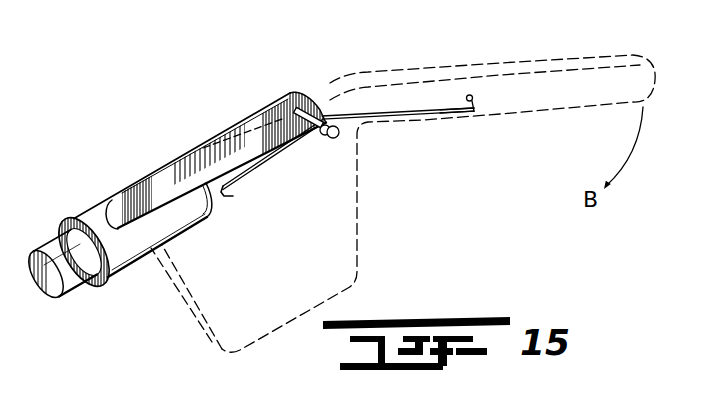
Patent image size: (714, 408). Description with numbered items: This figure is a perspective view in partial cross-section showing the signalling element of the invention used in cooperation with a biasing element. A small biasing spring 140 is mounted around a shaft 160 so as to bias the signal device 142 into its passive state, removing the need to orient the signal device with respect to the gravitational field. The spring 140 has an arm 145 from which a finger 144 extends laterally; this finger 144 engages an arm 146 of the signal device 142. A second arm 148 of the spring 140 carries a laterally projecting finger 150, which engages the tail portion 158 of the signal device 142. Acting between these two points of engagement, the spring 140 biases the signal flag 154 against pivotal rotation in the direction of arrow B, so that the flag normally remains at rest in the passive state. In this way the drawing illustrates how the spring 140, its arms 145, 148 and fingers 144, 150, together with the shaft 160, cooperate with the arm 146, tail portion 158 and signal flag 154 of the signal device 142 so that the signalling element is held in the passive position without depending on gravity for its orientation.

The biasing spring 140 is at (422, 121).
The signal device 142 is at (257, 108).
The finger 144 is at (231, 196).
The arm 145 is at (275, 158).
The arm 146 is at (161, 168).
The arm 148 is at (463, 118).
The finger 150 is at (475, 97).
The signal flag 154 is at (202, 347).
The tail portion 158 is at (574, 73).
The shaft 160 is at (333, 135).